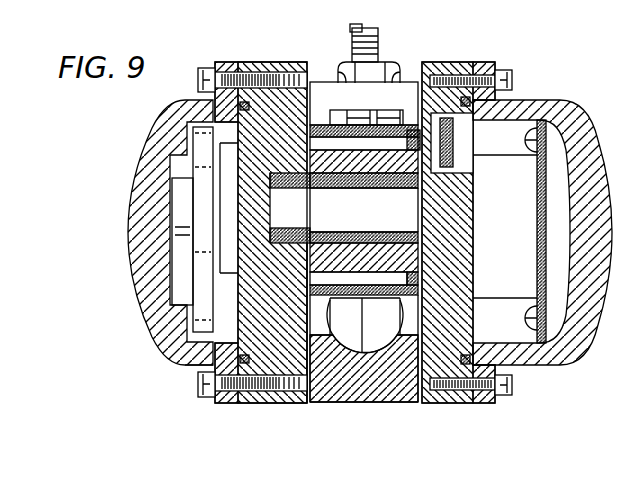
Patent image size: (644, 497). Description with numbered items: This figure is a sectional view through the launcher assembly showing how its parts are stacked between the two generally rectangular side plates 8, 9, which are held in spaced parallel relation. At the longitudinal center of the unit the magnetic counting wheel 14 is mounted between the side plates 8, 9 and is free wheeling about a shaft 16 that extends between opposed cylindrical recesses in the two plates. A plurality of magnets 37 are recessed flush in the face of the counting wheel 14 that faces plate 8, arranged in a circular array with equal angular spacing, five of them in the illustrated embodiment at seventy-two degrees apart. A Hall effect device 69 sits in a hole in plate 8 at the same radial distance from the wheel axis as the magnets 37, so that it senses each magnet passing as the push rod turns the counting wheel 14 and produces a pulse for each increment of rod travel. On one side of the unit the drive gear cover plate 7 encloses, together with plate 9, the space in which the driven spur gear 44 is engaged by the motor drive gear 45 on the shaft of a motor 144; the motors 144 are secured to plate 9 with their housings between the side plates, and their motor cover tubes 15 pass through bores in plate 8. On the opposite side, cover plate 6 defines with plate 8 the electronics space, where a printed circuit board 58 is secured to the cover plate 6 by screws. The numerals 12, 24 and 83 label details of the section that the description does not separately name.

The cover plate 6 is at (593, 178).
The drive gear cover plate 7 is at (146, 138).
The side plate 8 is at (449, 365).
The side plate 9 is at (297, 372).
The valve body 12 is at (405, 87).
The magnetic counting wheel 14 is at (360, 352).
The motor cover tube 15 is at (505, 264).
The shaft 16 is at (259, 247).
The grease fitting 24 is at (336, 57).
The magnet 37 is at (428, 272).
The drive gear 44 is at (183, 366).
The motor drive gear 45 is at (203, 259).
The printed circuit board 58 is at (543, 290).
The Hall effect device 69 is at (444, 145).
The cap screw 83 is at (306, 62).
The motor 144 is at (130, 276).